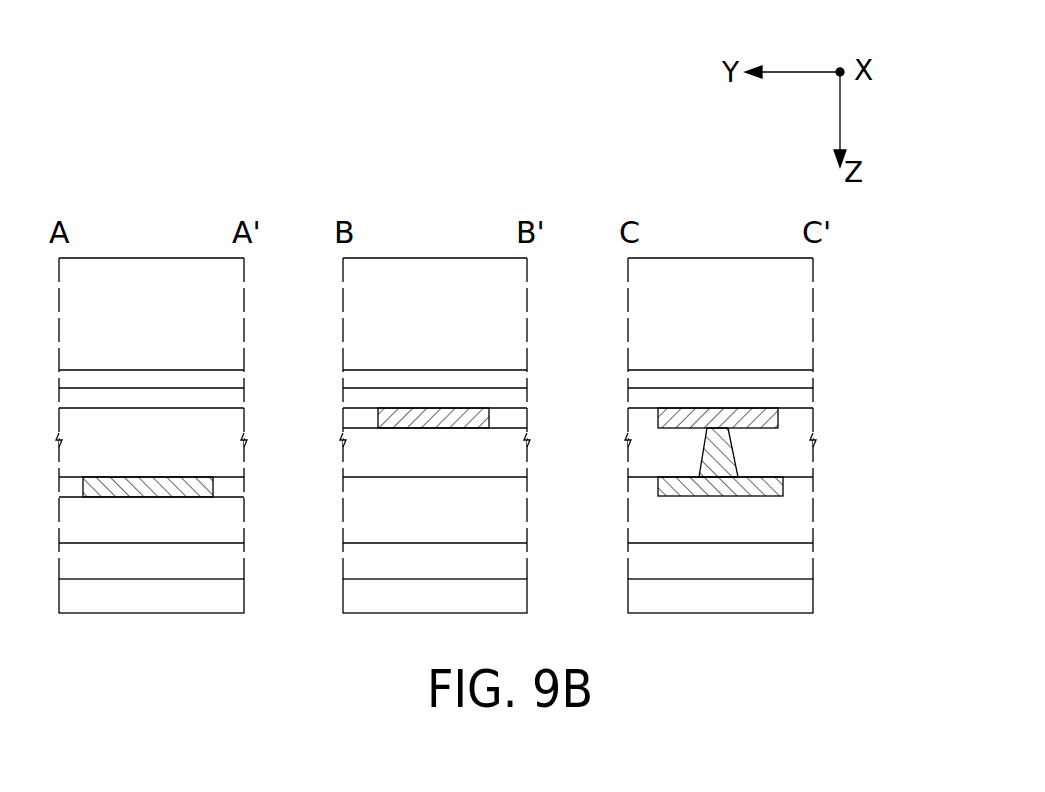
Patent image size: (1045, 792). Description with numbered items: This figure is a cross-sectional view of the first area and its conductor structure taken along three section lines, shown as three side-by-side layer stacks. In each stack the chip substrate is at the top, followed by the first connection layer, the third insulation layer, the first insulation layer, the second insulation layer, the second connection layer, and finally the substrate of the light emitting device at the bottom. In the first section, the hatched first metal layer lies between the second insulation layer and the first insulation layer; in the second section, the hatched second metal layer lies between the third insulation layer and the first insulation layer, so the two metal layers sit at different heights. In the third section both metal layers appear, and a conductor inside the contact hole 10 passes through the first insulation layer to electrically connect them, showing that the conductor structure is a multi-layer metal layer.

The contact hole 10 is at (730, 466).